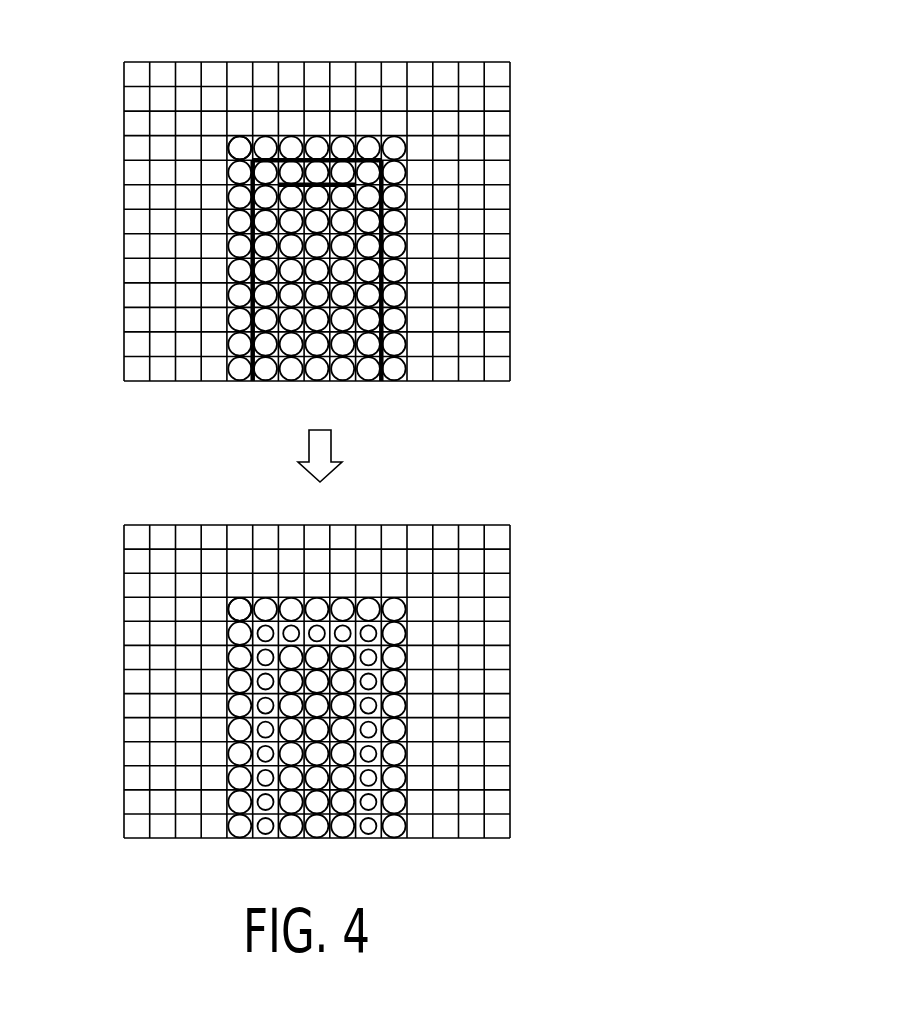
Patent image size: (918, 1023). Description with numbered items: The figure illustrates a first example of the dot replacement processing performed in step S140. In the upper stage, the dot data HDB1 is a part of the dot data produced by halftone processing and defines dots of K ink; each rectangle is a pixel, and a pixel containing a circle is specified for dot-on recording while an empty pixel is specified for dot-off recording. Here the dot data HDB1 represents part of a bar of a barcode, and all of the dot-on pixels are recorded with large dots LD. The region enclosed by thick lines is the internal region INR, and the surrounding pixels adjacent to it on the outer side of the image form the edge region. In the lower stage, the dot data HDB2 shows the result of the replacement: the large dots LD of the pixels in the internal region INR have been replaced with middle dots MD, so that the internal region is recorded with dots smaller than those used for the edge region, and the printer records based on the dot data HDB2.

The dot data HDB1 is at (470, 62).
The dot data HDB2 is at (470, 525).
The large dot LD is at (237, 135).
The internal region INR is at (252, 381).
The middle dot MD is at (262, 660).
The dot replacement processing step S140 is at (354, 456).